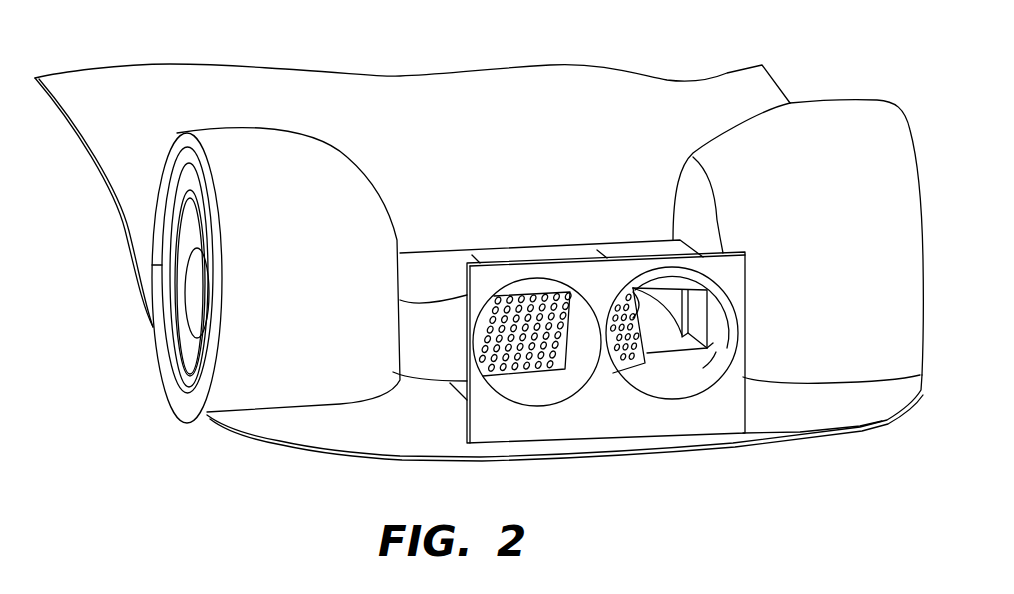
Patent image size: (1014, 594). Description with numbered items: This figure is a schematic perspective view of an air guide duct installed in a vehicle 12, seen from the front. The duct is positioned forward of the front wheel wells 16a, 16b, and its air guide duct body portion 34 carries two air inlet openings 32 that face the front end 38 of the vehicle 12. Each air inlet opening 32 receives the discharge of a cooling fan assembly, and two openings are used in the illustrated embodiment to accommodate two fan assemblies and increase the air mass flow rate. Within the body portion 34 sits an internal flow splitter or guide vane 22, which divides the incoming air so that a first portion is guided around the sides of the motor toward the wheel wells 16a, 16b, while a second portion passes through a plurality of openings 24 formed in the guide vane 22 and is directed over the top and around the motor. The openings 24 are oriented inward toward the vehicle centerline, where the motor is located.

The vehicle 12 is at (788, 56).
The wheel well 16a is at (250, 157).
The wheel well 16b is at (845, 133).
The guide vane 22 is at (566, 358).
The openings 24 is at (540, 363).
The air inlet opening 32 is at (668, 287).
The air guide duct body portion 34 is at (537, 253).
The front end 38 is at (747, 460).